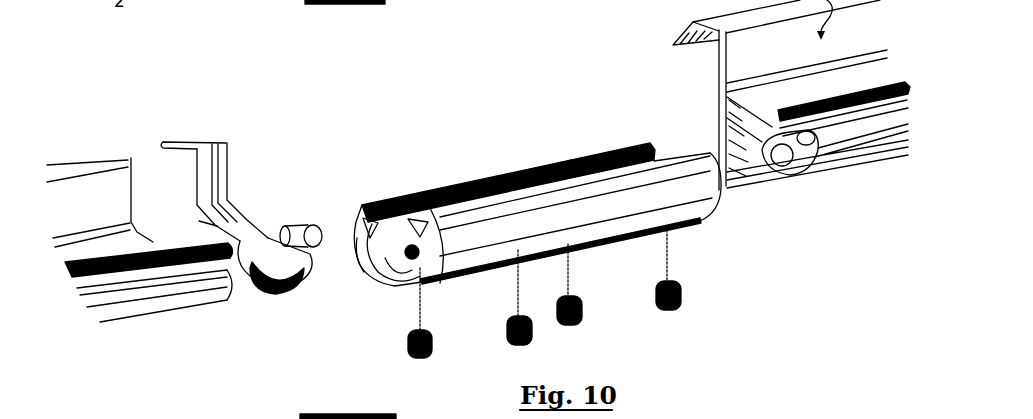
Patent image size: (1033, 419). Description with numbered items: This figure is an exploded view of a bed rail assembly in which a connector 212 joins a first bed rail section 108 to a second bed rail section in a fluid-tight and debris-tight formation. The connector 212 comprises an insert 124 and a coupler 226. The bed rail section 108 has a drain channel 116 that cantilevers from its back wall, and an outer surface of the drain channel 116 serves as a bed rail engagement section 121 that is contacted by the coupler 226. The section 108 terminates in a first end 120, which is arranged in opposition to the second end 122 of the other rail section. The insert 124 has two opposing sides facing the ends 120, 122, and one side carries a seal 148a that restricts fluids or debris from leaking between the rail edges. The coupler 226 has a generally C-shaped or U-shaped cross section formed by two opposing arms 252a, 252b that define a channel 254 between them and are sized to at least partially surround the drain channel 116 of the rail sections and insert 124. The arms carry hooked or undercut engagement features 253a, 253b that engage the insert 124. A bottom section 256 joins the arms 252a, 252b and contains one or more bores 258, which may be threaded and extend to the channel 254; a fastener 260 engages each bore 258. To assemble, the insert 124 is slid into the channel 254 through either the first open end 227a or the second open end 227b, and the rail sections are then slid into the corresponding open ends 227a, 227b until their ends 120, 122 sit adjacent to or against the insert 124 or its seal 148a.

The first bed rail section 108 is at (88, 172).
The drain channel 116 is at (120, 316).
The first end 120 is at (222, 276).
The bed rail engagement section 121 is at (150, 285).
The second end 122 is at (810, 167).
The insert 124 is at (241, 244).
The seal 148a is at (288, 293).
The connector 212 is at (520, 233).
The coupler 226 is at (517, 162).
The first open end 227a is at (352, 268).
The second open end 227b is at (674, 142).
The first arm 252a is at (702, 212).
The second arm 252b is at (617, 160).
The first engagement feature 253a is at (428, 218).
The second engagement feature 253b is at (375, 236).
The channel 254 is at (390, 247).
The bottom section 256 is at (403, 272).
The bore 258 is at (405, 252).
The fastener 260 is at (506, 334).